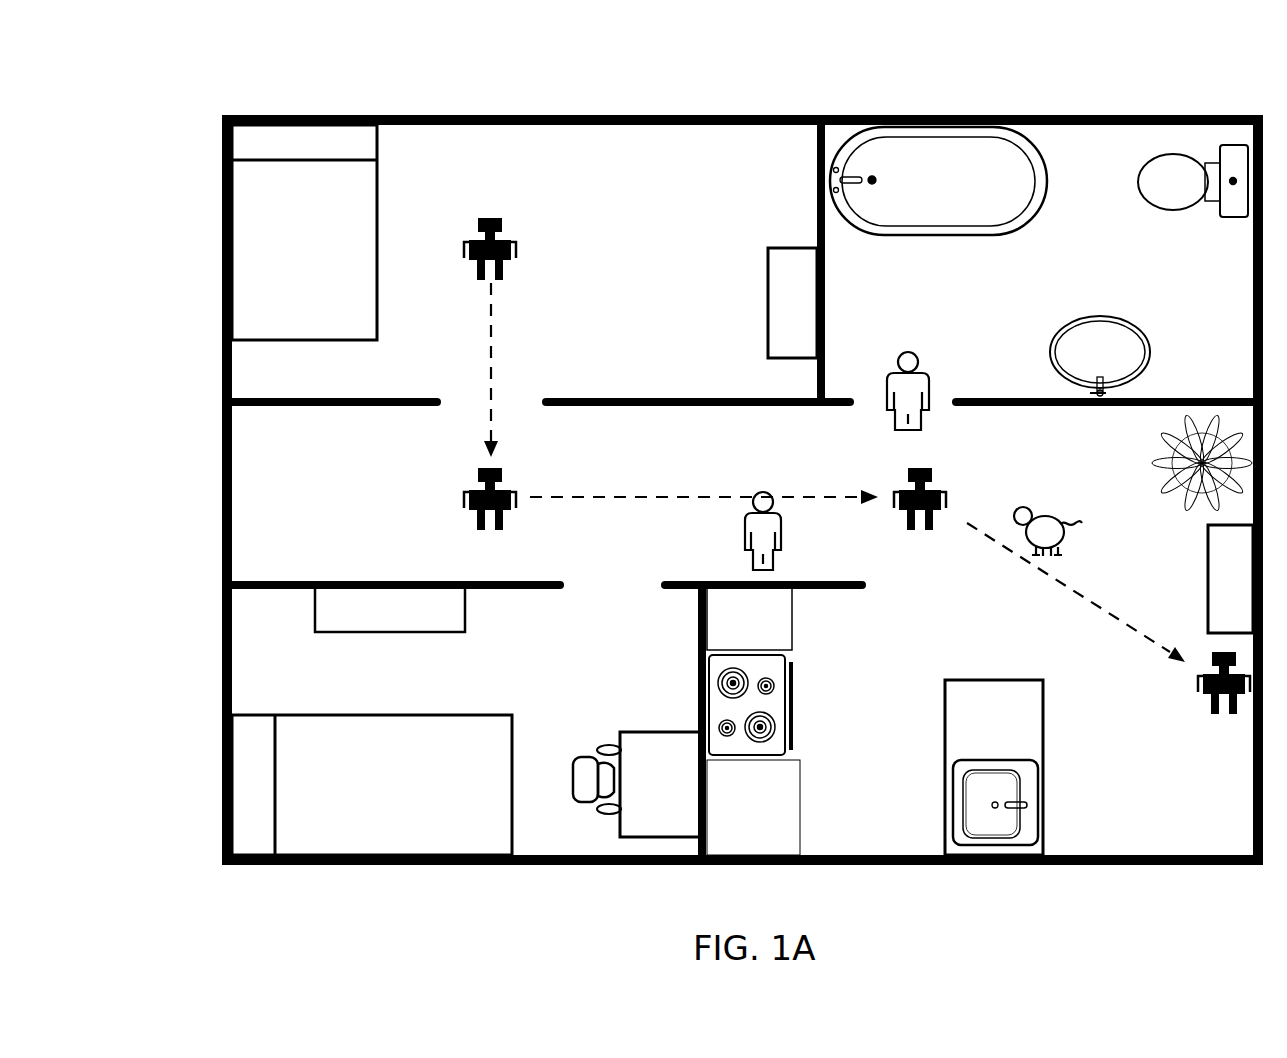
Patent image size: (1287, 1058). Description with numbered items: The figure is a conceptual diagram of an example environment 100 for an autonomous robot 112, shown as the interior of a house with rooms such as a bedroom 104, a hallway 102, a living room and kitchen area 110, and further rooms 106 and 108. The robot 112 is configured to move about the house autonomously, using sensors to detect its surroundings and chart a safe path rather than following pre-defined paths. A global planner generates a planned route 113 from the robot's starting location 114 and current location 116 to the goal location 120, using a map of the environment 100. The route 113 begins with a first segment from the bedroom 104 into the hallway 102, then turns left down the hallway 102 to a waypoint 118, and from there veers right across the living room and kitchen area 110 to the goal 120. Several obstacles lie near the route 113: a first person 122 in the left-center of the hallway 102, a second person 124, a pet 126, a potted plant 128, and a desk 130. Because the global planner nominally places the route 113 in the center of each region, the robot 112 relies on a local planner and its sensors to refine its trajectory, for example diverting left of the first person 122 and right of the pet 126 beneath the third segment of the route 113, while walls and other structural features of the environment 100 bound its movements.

The environment 100 is at (228, 78).
The hallway 102 is at (291, 438).
The bedroom 104 is at (682, 387).
The bedroom / office 106 is at (494, 688).
The bathroom 108 is at (1078, 281).
The living room and kitchen area 110 is at (885, 745).
The autonomous robot 112 is at (522, 252).
The planned route 113 is at (491, 370).
The start location 114 is at (532, 196).
The current location 116 is at (383, 558).
The waypoint 118 is at (934, 576).
The goal location 120 is at (1201, 754).
The first person 122 is at (745, 538).
The second person 124 is at (906, 352).
The pet 126 is at (1068, 541).
The potted plant 128 is at (1152, 469).
The desk 130 is at (1208, 582).